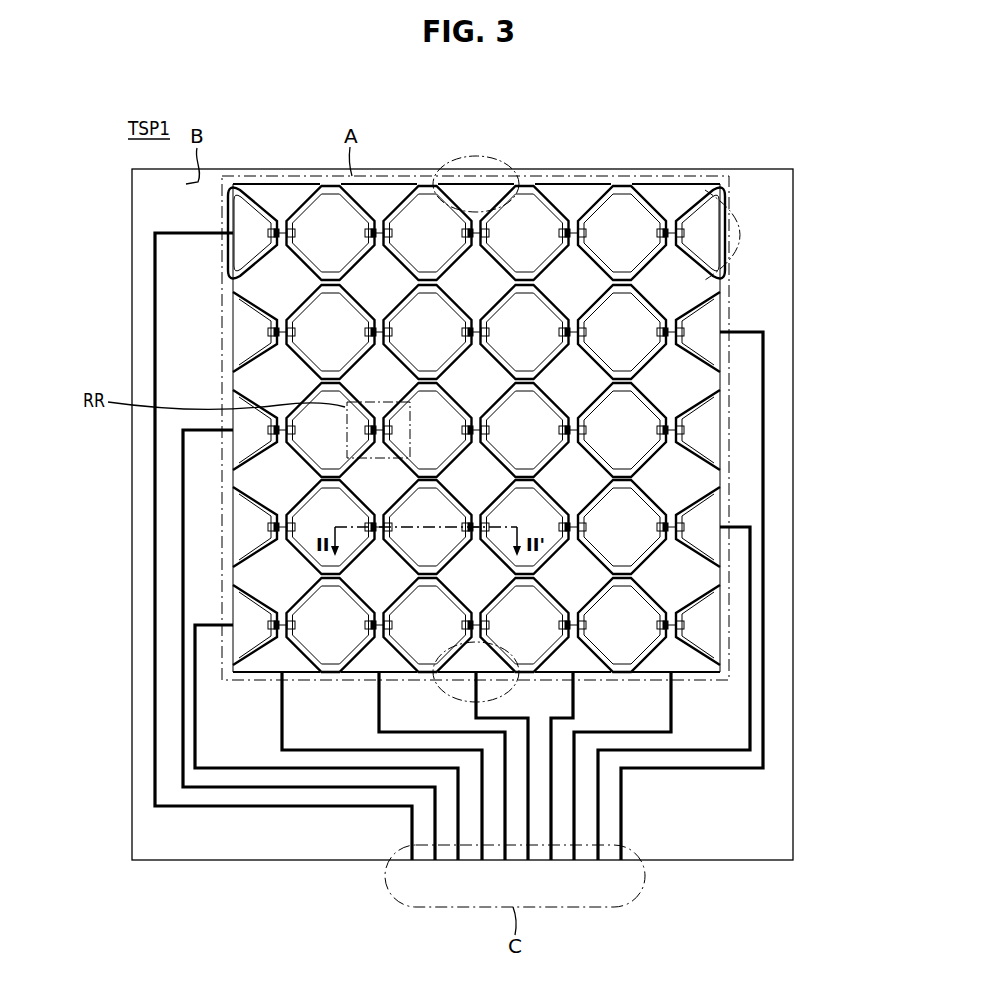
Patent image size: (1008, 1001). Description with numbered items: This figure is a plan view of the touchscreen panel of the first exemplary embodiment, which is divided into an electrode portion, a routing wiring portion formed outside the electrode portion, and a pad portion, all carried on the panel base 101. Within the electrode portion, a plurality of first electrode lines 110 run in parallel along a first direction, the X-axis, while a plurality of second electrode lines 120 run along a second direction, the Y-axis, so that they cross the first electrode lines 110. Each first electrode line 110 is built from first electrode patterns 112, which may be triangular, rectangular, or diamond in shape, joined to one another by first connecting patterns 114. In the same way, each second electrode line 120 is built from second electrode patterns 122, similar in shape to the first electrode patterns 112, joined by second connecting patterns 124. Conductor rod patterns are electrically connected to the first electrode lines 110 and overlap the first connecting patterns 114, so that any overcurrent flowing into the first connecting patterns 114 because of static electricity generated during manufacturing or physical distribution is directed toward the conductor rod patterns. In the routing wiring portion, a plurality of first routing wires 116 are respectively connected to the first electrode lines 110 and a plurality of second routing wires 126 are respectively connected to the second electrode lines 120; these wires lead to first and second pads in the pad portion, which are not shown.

The substrate 101 is at (794, 830).
The first electrode lines 110 is at (763, 233).
The first electrode patterns 112 is at (625, 212).
The first connecting patterns 114 is at (270, 330).
The first routing wires 116 is at (155, 272).
The second electrode lines 120 is at (480, 158).
The second electrode patterns 122 is at (552, 275).
The second connecting patterns 124 is at (573, 221).
The second routing wires 126 is at (282, 725).